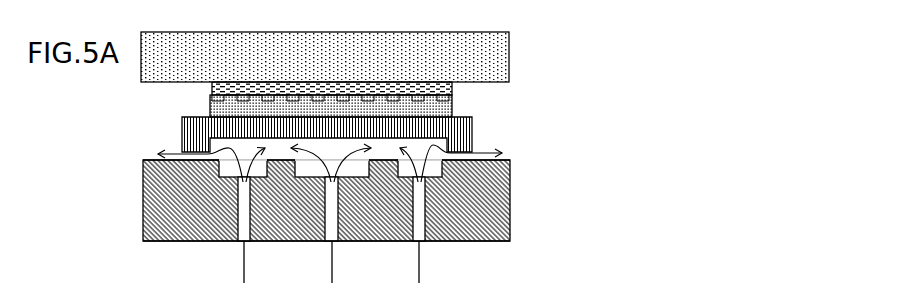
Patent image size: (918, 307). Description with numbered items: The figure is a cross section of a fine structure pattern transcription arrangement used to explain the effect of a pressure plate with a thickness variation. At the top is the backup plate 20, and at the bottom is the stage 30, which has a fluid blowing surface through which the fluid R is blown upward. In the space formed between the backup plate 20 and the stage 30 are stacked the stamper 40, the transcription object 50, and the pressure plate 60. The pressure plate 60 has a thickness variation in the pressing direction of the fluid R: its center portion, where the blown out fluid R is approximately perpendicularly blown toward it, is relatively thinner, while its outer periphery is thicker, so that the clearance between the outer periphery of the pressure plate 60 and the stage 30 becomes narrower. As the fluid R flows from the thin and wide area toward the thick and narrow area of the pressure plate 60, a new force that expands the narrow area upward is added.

The backup plate 20 is at (509, 54).
The stamper 40 is at (452, 93).
The transcription object 50 is at (452, 105).
The pressure plate 60 is at (472, 128).
The stage 30 is at (510, 200).
The fluid R is at (354, 277).